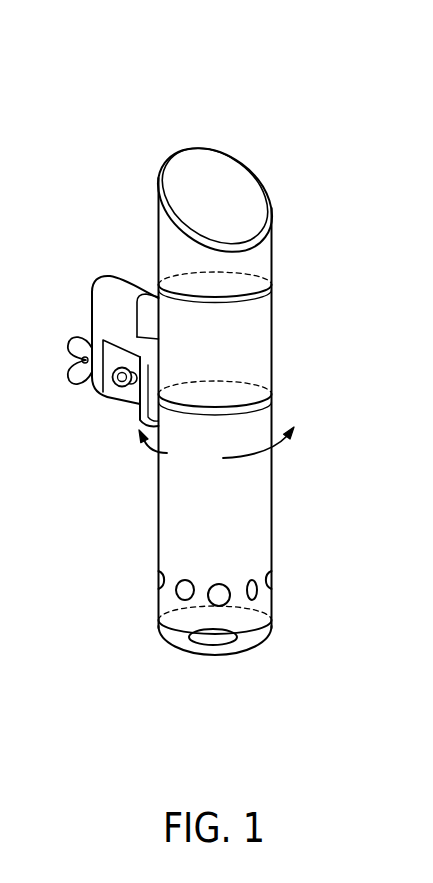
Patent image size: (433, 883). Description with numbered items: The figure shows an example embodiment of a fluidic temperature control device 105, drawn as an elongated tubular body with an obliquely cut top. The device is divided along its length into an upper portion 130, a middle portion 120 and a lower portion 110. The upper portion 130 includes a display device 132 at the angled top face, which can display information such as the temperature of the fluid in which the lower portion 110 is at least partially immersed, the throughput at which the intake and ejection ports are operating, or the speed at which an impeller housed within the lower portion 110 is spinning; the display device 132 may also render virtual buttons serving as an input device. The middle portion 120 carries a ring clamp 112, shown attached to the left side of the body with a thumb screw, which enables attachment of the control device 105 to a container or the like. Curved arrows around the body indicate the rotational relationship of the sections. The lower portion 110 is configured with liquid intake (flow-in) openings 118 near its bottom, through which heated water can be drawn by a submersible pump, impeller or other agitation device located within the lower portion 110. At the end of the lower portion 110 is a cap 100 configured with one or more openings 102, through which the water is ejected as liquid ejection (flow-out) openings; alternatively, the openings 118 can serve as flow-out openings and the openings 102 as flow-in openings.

The cap 100 is at (263, 650).
The openings 102 is at (218, 635).
The fluidic temperature control device 105 is at (155, 51).
The lower portion 110 is at (260, 512).
The ring clamp 112 is at (90, 318).
The liquid intake (flow-in) openings 118 is at (160, 583).
The middle portion 120 is at (257, 343).
The upper portion 130 is at (165, 233).
The display device 132 is at (232, 175).